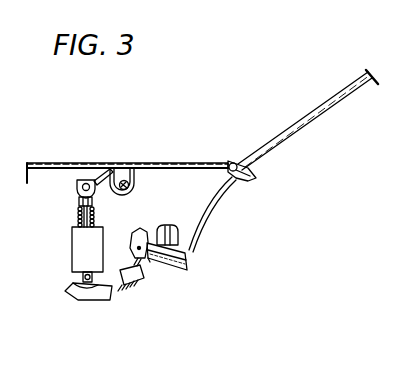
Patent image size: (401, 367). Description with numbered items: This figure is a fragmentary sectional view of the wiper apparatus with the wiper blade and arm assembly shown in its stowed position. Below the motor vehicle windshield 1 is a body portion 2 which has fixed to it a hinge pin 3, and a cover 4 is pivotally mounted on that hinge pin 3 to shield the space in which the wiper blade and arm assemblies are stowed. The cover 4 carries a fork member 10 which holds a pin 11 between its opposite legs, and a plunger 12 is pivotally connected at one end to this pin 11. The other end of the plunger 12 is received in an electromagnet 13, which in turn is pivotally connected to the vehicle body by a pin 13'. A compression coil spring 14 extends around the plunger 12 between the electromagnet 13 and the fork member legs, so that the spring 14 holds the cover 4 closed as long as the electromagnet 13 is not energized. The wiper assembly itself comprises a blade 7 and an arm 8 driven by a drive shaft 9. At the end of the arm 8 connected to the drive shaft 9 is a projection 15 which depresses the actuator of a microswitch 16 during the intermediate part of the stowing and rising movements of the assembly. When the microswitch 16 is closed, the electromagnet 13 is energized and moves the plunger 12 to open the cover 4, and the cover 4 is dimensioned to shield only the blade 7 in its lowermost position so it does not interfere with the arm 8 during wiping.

The motor vehicle windshield 1 is at (321, 105).
The body portion 2 is at (49, 163).
The hinge pin 3 is at (131, 165).
The cover 4 is at (190, 166).
The wiper blade 7 is at (172, 228).
The wiper arm 8 is at (139, 232).
The drive shaft 9 is at (189, 259).
The fork member 10 is at (104, 176).
The pin 11 is at (86, 187).
The plunger 12 is at (78, 218).
The electromagnet 13 is at (66, 254).
The pin 13' is at (71, 294).
The compression coil spring 14 is at (78, 200).
The projection 15 is at (152, 265).
The microswitch 16 is at (141, 273).